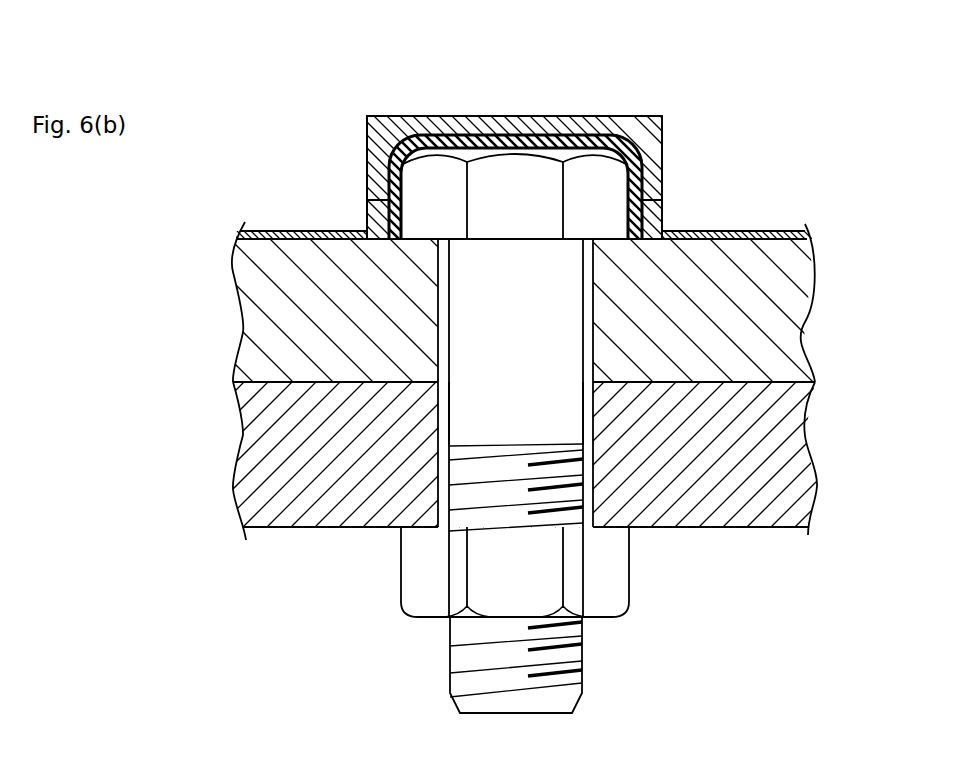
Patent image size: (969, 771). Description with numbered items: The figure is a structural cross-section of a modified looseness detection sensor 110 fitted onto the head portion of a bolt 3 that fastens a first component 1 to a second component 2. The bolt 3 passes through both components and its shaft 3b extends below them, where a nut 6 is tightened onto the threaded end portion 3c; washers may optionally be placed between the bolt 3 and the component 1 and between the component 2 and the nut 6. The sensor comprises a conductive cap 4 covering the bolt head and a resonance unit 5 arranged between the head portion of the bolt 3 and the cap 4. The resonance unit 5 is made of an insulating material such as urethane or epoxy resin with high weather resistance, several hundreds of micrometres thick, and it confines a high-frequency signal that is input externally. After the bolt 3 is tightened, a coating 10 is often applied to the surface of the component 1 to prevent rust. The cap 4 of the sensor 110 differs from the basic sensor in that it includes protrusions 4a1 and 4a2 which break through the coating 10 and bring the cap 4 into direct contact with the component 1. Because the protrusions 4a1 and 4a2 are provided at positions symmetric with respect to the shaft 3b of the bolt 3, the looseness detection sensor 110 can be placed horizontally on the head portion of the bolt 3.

The looseness detection sensor 110 is at (670, 110).
The cap 4 is at (430, 116).
The protrusion 4a1 is at (652, 242).
The protrusion 4a2 is at (378, 242).
The resonance unit 5 is at (510, 137).
The bolt 3 is at (590, 170).
The shaft 3b is at (458, 426).
The bolt tip / threaded end 3c is at (583, 657).
The nut 6 is at (614, 568).
The coating 10 is at (742, 230).
The component 1 is at (790, 318).
The component 2 is at (793, 466).